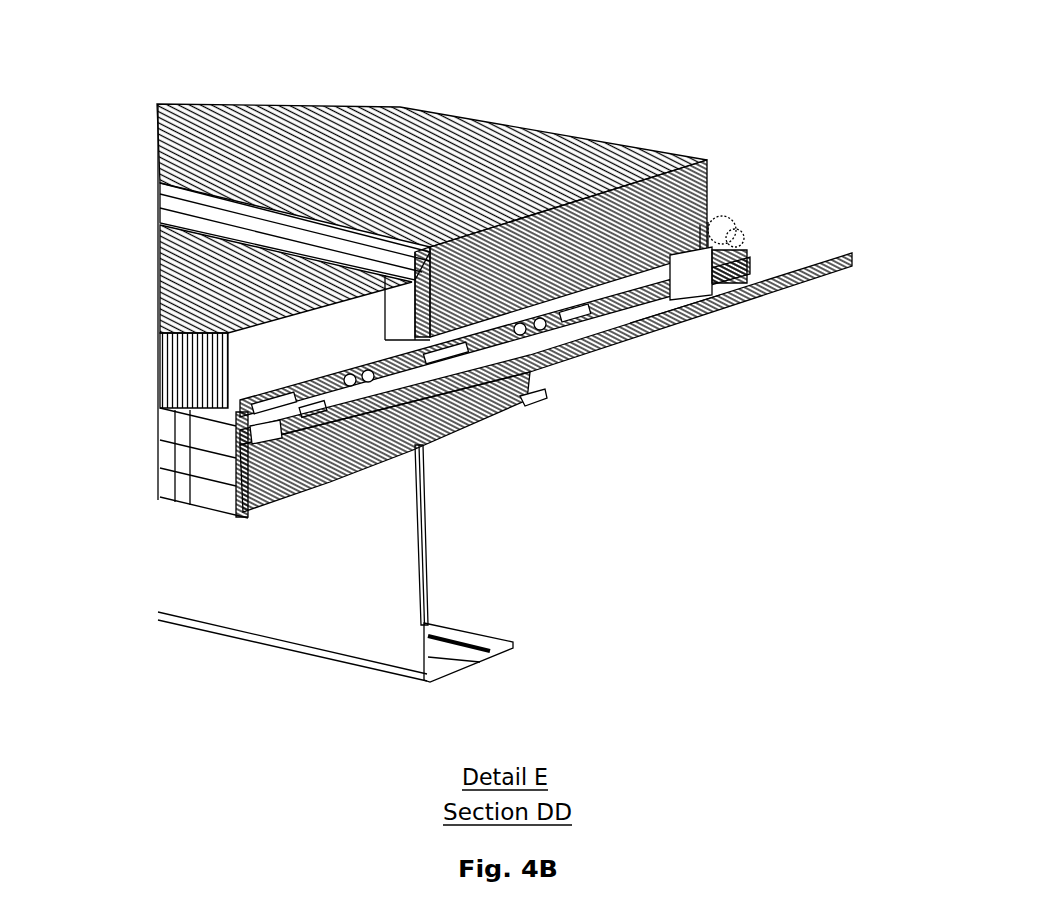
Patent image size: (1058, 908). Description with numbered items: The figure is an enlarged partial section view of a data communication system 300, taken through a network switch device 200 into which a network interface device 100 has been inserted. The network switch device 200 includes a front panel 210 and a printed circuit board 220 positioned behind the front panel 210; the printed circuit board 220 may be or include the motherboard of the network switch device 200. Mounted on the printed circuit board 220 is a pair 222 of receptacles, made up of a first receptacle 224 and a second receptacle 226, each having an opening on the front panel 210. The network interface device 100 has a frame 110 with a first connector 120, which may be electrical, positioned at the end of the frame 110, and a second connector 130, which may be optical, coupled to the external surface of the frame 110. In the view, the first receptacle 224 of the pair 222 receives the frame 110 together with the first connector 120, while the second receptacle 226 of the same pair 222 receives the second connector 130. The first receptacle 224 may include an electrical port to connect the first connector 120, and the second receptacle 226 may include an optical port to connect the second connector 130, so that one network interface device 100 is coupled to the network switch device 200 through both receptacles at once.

The data communication system 300 is at (84, 49).
The network interface device 100 is at (697, 88).
The frame 110 is at (487, 318).
The second connector 130 is at (468, 410).
The first connector 120 is at (652, 287).
The network switch device 200 is at (952, 471).
The printed circuit board 220 is at (846, 262).
The pair of receptacles 222 is at (759, 369).
The first receptacle 224 is at (532, 403).
The second receptacle 226 is at (677, 307).
The front panel 210 is at (413, 637).